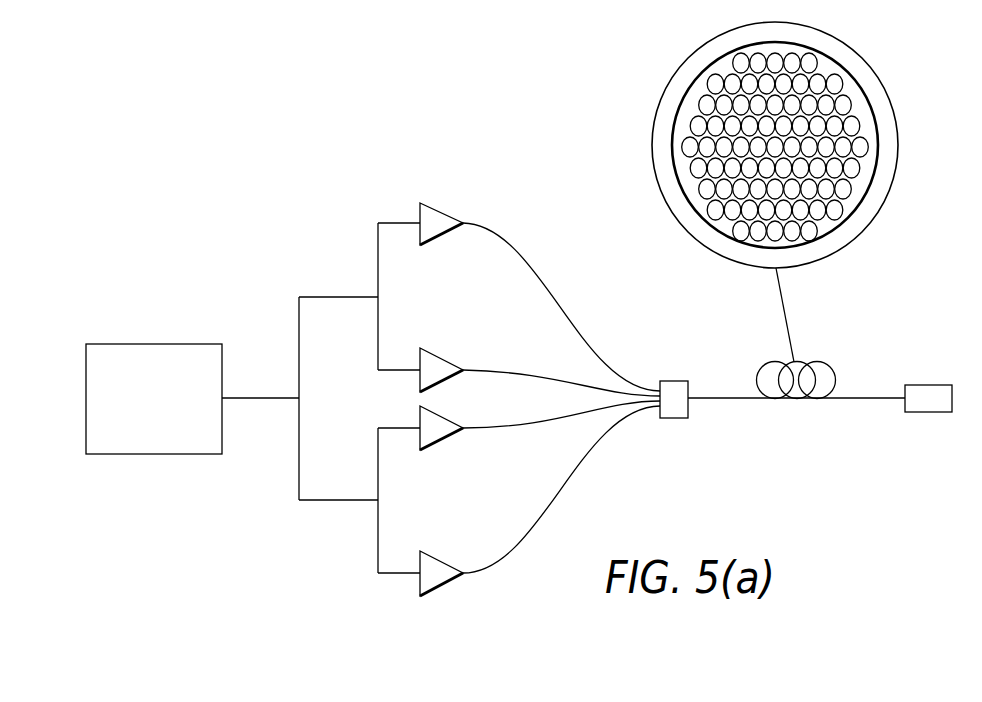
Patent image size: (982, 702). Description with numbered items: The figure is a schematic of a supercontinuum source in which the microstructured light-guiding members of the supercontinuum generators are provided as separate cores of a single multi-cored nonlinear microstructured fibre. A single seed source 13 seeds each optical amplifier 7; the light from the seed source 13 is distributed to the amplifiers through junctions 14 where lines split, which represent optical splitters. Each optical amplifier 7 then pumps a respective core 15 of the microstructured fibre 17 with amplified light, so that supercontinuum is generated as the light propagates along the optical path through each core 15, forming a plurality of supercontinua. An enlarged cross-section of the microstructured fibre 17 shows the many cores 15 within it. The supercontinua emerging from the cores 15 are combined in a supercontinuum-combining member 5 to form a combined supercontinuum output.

The seed source 13 is at (204, 344).
The junctions 14 is at (378, 297).
The optical amplifier 7 is at (441, 211).
The microstructured fibre 17 is at (820, 363).
The core 15 is at (745, 107).
The supercontinuum-combining member 5 is at (938, 412).